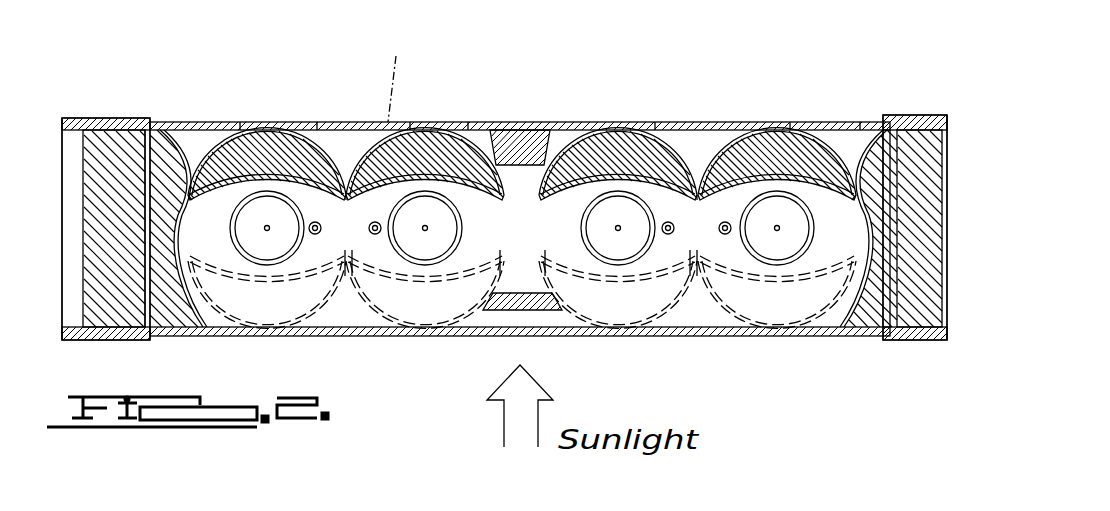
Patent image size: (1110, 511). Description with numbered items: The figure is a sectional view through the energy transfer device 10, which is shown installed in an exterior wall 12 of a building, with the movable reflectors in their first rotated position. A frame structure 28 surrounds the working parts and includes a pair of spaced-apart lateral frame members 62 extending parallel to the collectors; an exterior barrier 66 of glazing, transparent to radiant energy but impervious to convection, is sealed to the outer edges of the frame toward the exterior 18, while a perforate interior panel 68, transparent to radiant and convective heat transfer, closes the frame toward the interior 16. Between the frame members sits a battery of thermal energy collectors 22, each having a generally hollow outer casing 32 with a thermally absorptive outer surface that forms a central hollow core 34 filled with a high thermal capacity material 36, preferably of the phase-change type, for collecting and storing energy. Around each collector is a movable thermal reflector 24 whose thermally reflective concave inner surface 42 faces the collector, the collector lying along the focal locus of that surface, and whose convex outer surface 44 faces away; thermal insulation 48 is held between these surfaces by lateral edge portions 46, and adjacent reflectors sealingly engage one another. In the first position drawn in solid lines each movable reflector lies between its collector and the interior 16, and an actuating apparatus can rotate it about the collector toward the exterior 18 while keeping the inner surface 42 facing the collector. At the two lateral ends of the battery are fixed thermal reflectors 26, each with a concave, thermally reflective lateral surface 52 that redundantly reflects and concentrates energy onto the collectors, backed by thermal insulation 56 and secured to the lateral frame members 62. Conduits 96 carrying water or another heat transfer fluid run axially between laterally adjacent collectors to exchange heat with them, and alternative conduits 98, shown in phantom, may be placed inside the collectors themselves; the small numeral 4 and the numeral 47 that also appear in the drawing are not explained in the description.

The energy transfer device 10 is at (148, 104).
The exterior wall 12 is at (906, 134).
The interior 16 is at (530, 71).
The exterior 18 is at (740, 404).
The thermal energy collector 22 is at (690, 352).
The movable thermal reflector 24 is at (212, 146).
The fixed thermal reflector 26 is at (192, 328).
The frame structure 28 is at (146, 314).
The outer casing 32 is at (418, 266).
The central hollow core 34 is at (268, 261).
The high thermal capacity material 36 is at (252, 218).
The section line 4- 4 is at (396, 78).
The concave inner surface 42 is at (492, 246).
The convex outer surface 44 is at (275, 122).
The lateral edge portion 46 is at (346, 192).
The reflector backing 47 is at (317, 122).
The thermal insulation 48 is at (240, 125).
The lateral surface 52 is at (150, 258).
The thermal insulation 56 is at (166, 328).
The lateral frame member 62 is at (145, 208).
The exterior barrier 66 is at (472, 338).
The perforate interior panel 68 is at (622, 122).
The conduit 96 is at (316, 236).
The conduit 98 is at (262, 330).